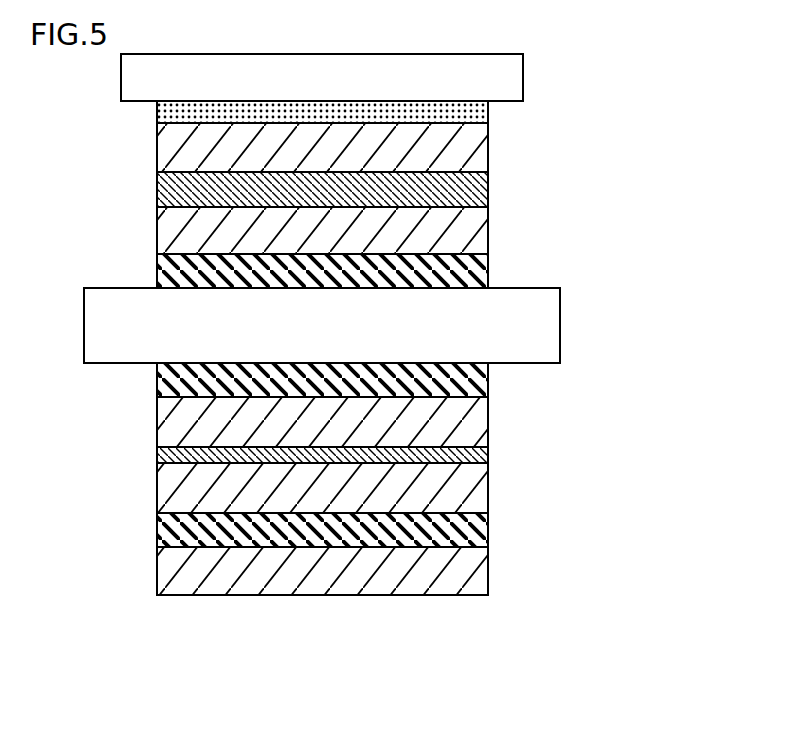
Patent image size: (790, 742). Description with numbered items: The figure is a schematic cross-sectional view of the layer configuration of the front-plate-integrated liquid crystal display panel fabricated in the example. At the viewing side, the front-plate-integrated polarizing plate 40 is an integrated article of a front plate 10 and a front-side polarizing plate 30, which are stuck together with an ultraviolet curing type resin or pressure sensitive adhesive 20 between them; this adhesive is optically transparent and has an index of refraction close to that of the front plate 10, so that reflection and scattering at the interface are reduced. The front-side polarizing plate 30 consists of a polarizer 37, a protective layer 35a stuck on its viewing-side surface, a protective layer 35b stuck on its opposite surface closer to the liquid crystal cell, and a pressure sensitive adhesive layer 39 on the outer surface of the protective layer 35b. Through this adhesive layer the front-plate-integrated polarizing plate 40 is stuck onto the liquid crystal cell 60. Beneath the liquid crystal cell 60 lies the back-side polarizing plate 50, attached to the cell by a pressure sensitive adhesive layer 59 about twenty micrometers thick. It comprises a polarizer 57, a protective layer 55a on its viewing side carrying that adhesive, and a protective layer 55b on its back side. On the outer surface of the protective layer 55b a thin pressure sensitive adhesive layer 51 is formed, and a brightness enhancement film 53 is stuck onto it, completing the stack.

The front plate 10 is at (523, 76).
The ultraviolet curing type resin or pressure sensitive adhesive 20 is at (488, 110).
The front-side polarizing plate 30 is at (407, 205).
The protective layer 35a is at (488, 148).
The polarizer 37 is at (488, 185).
The protective layer 35b is at (488, 228).
The pressure sensitive adhesive layer 39 is at (373, 271).
The front-plate-integrated polarizing plate 40 is at (421, 171).
The liquid crystal cell 60 is at (560, 322).
The back-side polarizing plate 50 is at (407, 479).
The pressure sensitive adhesive layer 59 is at (488, 380).
The protective layer 55a is at (488, 420).
The polarizer 57 is at (488, 453).
The protective layer 55b is at (488, 488).
The pressure sensitive adhesive layer 51 is at (488, 530).
The brightness enhancement film 53 is at (373, 571).